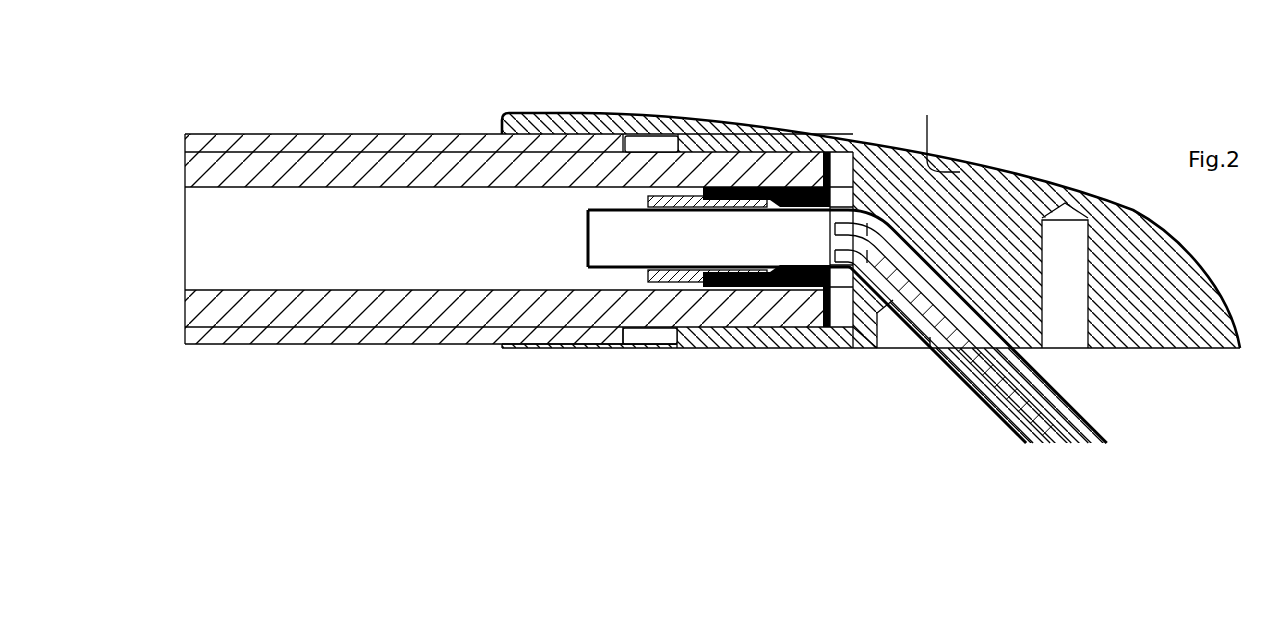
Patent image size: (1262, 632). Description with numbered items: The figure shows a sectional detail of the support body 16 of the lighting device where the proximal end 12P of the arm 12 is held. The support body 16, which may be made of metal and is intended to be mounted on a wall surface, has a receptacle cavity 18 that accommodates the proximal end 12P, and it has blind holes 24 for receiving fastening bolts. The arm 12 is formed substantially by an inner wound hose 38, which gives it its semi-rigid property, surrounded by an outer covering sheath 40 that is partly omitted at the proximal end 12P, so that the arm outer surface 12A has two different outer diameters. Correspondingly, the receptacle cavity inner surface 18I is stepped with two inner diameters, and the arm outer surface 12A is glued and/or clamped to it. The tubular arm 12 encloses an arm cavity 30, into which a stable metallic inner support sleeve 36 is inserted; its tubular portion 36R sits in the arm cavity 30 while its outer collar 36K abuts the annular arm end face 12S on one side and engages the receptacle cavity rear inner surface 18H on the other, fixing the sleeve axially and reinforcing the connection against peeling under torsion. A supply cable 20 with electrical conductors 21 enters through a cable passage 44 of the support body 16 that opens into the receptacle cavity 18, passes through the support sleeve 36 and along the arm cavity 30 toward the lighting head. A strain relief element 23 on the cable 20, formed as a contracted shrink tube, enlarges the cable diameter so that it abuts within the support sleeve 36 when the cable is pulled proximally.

The arm 12 is at (240, 310).
The arm outer surface 12A is at (315, 333).
The proximal end of the arm 12P is at (827, 345).
The annular arm end face 12S is at (877, 345).
The support body 16 is at (1003, 178).
The receptacle cavity 18 is at (698, 150).
The receptacle cavity rear inner surface 18H is at (927, 115).
The receptacle cavity inner surface 18I is at (535, 345).
The supply cable 20 is at (1010, 372).
The electrical conductors 21 is at (1080, 446).
The strain relief element 23 is at (670, 270).
The blind holes 24 is at (1063, 312).
The arm cavity 30 is at (203, 250).
The inner support sleeve 36 is at (790, 185).
The outer collar 36K is at (828, 157).
The tubular portion 36R is at (777, 182).
The wound hose 38 is at (225, 172).
The outer covering sheath 40 is at (230, 143).
The cable passage 44 is at (927, 243).